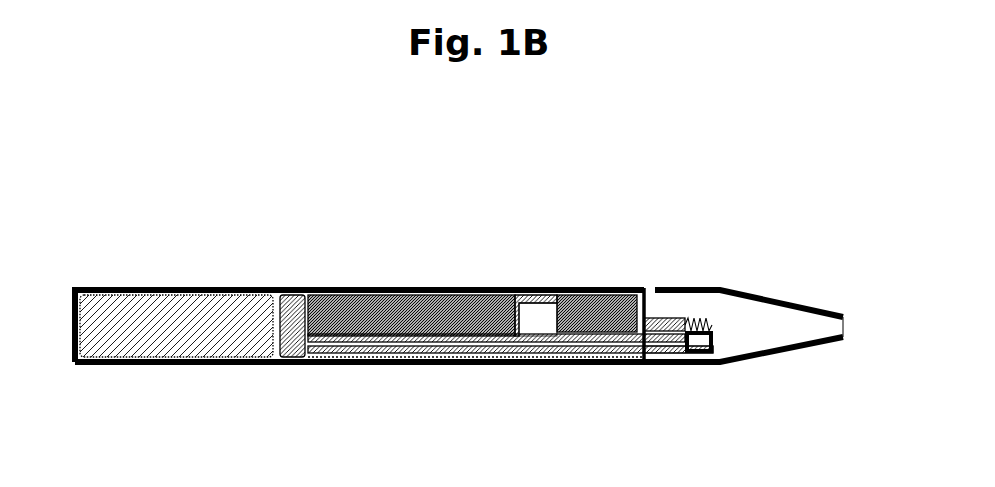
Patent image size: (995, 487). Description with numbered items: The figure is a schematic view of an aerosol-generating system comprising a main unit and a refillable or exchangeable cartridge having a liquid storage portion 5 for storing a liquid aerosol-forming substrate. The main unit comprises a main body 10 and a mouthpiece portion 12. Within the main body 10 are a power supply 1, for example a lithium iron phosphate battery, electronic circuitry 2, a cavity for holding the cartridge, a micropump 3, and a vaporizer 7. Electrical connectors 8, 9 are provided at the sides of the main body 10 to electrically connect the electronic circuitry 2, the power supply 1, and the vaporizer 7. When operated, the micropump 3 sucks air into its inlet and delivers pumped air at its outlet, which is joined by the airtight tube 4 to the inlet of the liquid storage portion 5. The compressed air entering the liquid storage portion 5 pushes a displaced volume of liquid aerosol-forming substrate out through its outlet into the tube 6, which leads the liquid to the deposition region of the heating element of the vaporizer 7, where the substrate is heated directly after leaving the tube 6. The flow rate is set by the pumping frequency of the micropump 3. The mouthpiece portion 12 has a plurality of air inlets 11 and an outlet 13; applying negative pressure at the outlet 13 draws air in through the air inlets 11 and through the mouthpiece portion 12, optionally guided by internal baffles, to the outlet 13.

The power supply 1 is at (113, 300).
The electronic circuitry 2 is at (292, 303).
The micropump 3 is at (378, 302).
The tube 4 is at (535, 300).
The liquid storage portion 5 is at (583, 300).
The tube 6 is at (666, 318).
The vaporizer 7 is at (712, 326).
The electrical connector 8 is at (625, 351).
The electrical connector 9 is at (557, 334).
The main body 10 is at (421, 360).
The air inlets 11 is at (653, 284).
The mouthpiece portion 12 is at (792, 303).
The outlet 13 is at (847, 322).